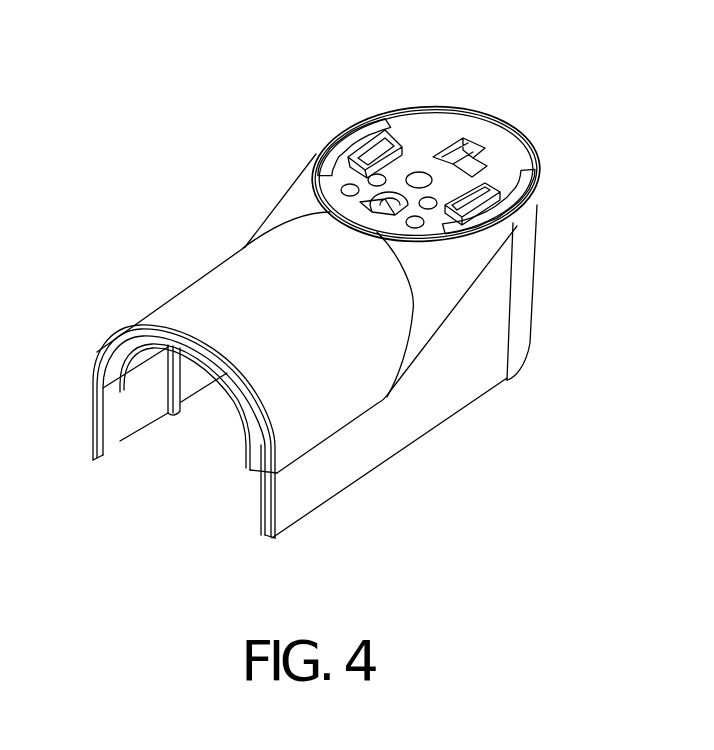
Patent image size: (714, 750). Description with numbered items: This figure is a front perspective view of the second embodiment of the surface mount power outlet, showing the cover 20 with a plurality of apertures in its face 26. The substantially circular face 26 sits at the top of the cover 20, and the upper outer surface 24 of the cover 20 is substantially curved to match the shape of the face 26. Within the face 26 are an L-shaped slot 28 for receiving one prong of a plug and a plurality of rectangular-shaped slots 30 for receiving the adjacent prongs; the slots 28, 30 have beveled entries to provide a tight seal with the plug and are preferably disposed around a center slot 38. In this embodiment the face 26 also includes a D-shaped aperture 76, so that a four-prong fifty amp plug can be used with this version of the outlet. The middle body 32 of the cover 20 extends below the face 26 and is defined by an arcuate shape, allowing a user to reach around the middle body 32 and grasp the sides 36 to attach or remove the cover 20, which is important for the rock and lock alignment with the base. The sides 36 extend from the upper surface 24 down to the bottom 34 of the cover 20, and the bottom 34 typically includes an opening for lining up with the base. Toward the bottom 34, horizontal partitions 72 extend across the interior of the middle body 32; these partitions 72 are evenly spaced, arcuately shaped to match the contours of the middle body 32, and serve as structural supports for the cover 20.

The cover 20 is at (172, 292).
The upper outer surface 24 is at (542, 297).
The face 26 is at (417, 150).
The L-shaped slot 28 is at (473, 140).
The rectangular-shaped slots 30 is at (368, 130).
The middle body 32 is at (304, 307).
The bottom 34 is at (276, 540).
The sides 36 is at (454, 354).
The center slot 38 is at (418, 178).
The horizontal partitions 72 is at (172, 412).
The D-shaped aperture 76 is at (318, 208).